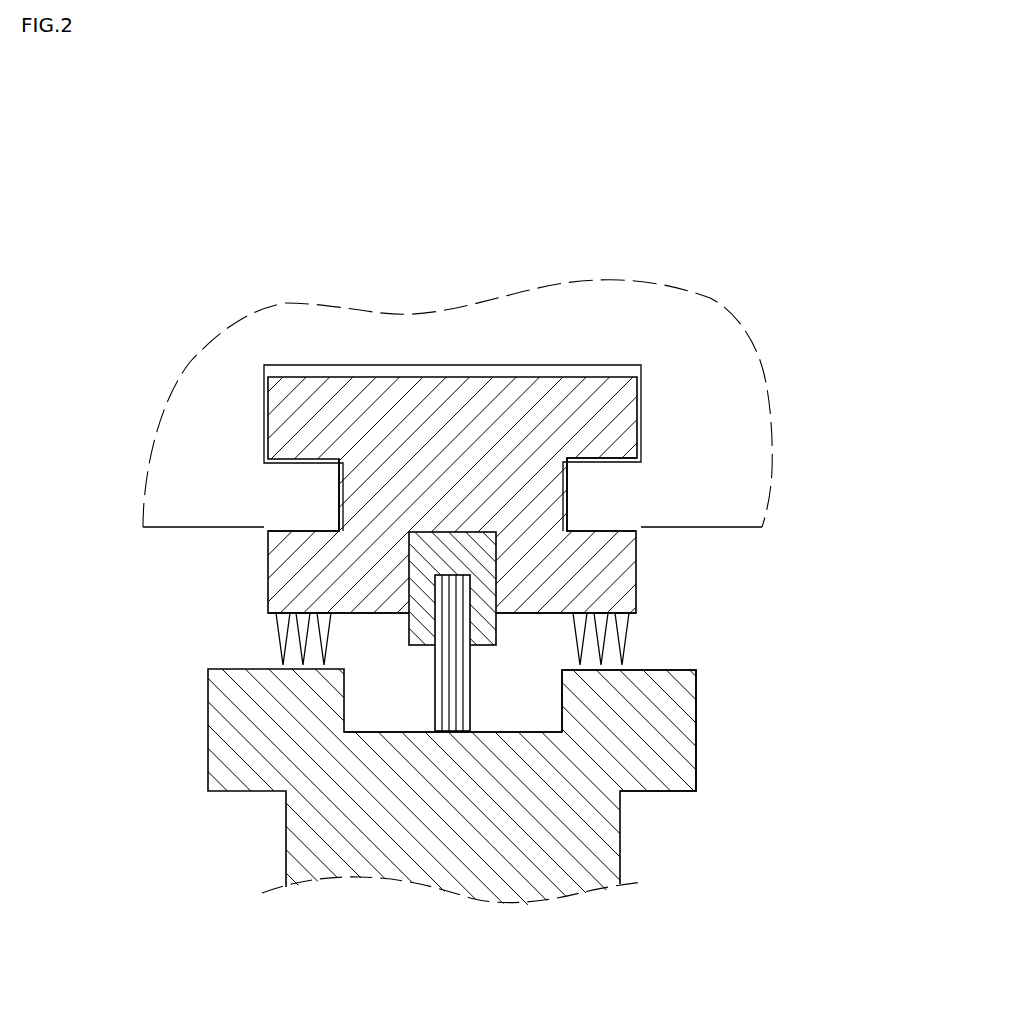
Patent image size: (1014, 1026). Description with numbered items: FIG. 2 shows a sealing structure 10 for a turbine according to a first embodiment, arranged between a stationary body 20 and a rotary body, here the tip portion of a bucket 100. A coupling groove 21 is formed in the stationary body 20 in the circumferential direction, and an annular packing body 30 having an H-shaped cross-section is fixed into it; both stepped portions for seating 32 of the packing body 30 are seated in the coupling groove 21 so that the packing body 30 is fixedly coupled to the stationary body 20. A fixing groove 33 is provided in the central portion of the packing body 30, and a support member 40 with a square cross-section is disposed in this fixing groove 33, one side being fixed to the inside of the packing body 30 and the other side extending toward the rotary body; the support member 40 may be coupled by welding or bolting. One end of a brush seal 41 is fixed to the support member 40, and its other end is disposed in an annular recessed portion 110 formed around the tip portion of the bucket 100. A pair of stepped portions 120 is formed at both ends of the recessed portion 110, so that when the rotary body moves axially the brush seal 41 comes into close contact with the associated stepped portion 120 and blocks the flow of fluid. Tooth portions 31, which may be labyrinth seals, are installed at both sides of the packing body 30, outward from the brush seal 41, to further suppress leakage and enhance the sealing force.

The puncturing device 10 is at (313, 180).
The stationary body 20 is at (672, 340).
The coupling groove 21 is at (460, 368).
The packing body 30 is at (600, 422).
The tooth portion 31 is at (622, 632).
The stepped portion for seating 32 is at (603, 462).
The fixing groove 33 is at (405, 583).
The support member 40 is at (477, 568).
The brush seal 41 is at (450, 677).
The bucket 100 is at (367, 825).
The recessed portion 110 is at (518, 733).
The stepped portion 120 is at (696, 760).